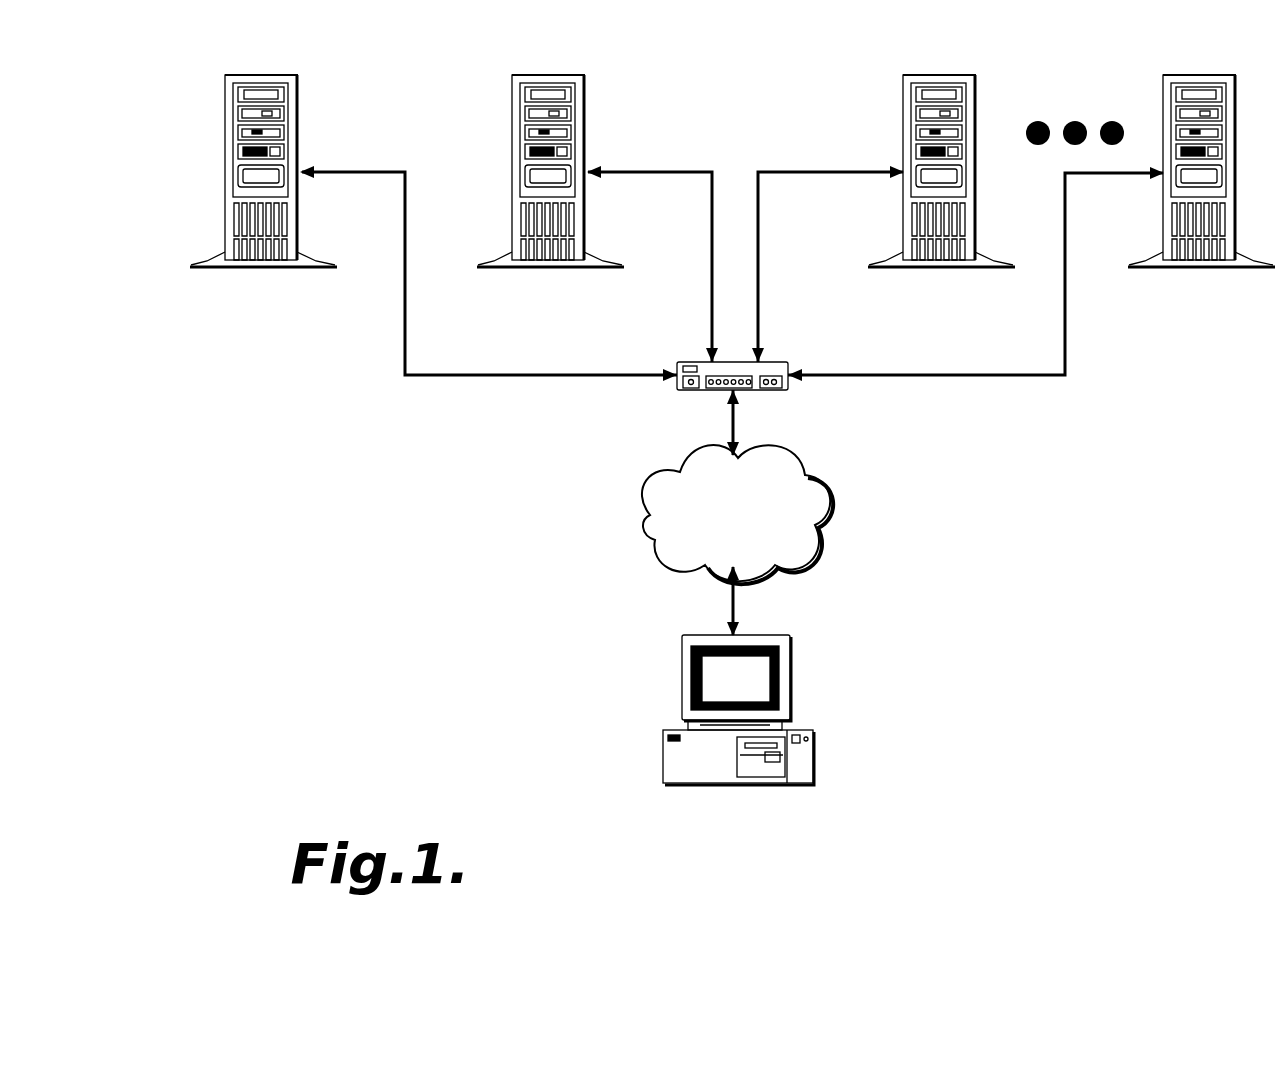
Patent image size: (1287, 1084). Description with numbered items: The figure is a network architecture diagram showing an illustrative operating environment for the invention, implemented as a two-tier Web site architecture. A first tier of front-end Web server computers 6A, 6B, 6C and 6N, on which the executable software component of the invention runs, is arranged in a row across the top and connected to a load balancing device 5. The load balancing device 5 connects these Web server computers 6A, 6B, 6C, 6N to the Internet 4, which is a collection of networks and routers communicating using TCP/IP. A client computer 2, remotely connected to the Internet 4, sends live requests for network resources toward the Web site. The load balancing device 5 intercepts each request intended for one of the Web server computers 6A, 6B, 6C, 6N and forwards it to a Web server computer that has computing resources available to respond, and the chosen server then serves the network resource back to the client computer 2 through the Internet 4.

The Web server computer 6A is at (237, 263).
The Web server computer 6B is at (523, 263).
The Web server computer 6C is at (917, 263).
The Web server computer 6N is at (1173, 265).
The load balancing device 5 is at (788, 392).
The Internet 4 is at (657, 528).
The client computer 2 is at (813, 767).